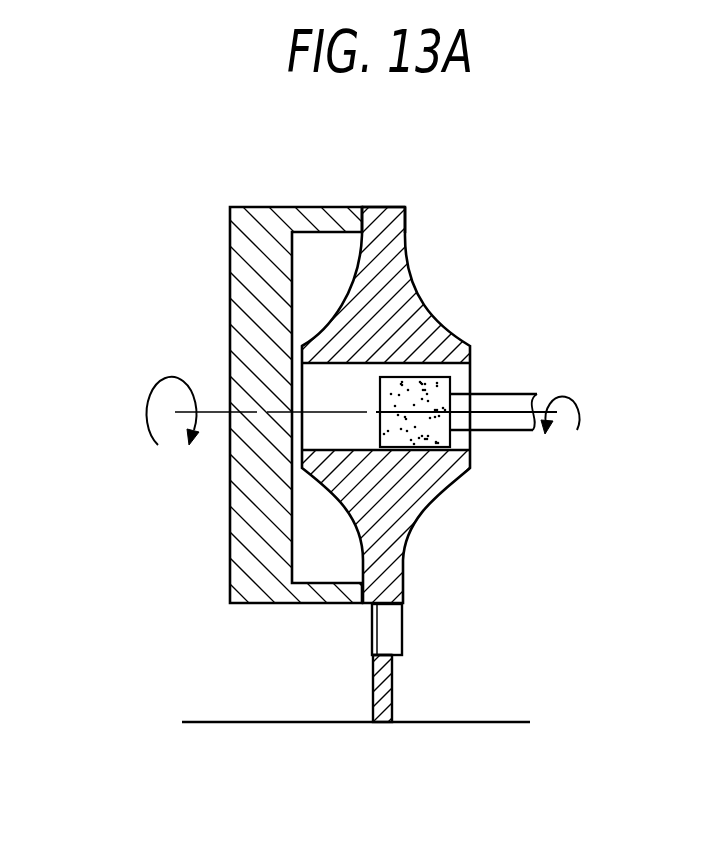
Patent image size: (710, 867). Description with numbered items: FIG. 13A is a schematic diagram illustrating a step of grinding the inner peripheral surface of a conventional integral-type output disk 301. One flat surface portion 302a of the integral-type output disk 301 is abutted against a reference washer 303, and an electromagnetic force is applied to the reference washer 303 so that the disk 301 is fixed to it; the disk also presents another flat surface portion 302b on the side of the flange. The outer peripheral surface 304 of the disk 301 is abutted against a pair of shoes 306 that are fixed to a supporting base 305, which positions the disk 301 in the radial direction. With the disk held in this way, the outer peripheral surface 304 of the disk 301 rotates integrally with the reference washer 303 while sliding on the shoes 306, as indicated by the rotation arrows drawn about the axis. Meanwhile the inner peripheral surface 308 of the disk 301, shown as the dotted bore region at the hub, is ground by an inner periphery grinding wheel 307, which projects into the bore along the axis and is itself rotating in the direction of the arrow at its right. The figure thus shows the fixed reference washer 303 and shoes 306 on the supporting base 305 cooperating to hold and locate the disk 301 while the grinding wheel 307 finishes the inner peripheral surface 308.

The integral-type output disk 301 is at (387, 487).
The flat surface portion 302a is at (345, 209).
The rotor flange portion 302b is at (405, 213).
The reference washer 303 is at (230, 248).
The outer peripheral surface 304 is at (402, 625).
The supporting base 305 is at (383, 716).
The shoes 306 is at (388, 635).
The inner periphery grinding wheel 307 is at (450, 435).
The inner peripheral surface 308 is at (337, 373).